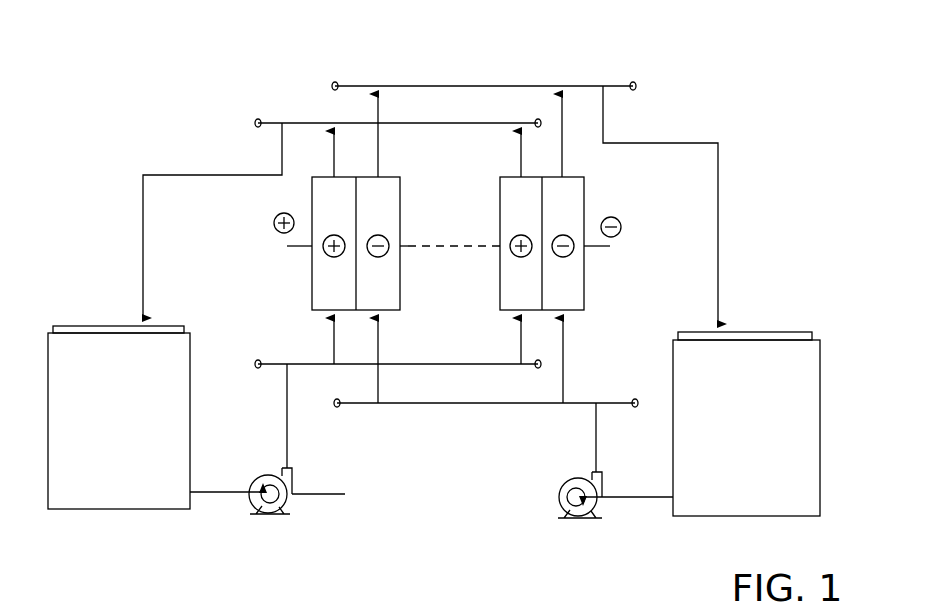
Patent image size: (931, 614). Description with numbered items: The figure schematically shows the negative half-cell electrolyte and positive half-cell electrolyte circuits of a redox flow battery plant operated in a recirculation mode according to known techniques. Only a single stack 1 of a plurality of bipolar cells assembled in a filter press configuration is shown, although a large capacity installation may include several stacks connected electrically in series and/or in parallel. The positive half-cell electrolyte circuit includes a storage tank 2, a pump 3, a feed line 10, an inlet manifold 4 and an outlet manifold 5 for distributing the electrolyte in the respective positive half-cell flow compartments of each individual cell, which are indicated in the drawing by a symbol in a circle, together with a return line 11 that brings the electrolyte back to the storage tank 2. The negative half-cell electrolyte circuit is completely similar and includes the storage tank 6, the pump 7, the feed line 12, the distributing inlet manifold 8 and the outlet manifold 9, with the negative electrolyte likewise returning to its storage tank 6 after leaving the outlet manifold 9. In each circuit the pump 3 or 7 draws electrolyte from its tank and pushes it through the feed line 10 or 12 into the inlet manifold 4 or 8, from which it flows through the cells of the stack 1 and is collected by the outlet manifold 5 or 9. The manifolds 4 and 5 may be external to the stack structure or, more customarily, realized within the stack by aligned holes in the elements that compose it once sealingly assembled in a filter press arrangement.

The stack 1 is at (588, 202).
The storage tank 2 is at (197, 453).
The pump 3 is at (275, 491).
The inlet manifold 4 is at (305, 360).
The outlet manifold 5 is at (298, 117).
The storage tank 6 is at (673, 346).
The pump 7 is at (552, 497).
The distributing inlet manifold 8 is at (427, 408).
The outlet manifold 9 is at (437, 80).
The feed line 10 is at (283, 399).
The return line 11 is at (198, 170).
The feed line 12 is at (598, 443).